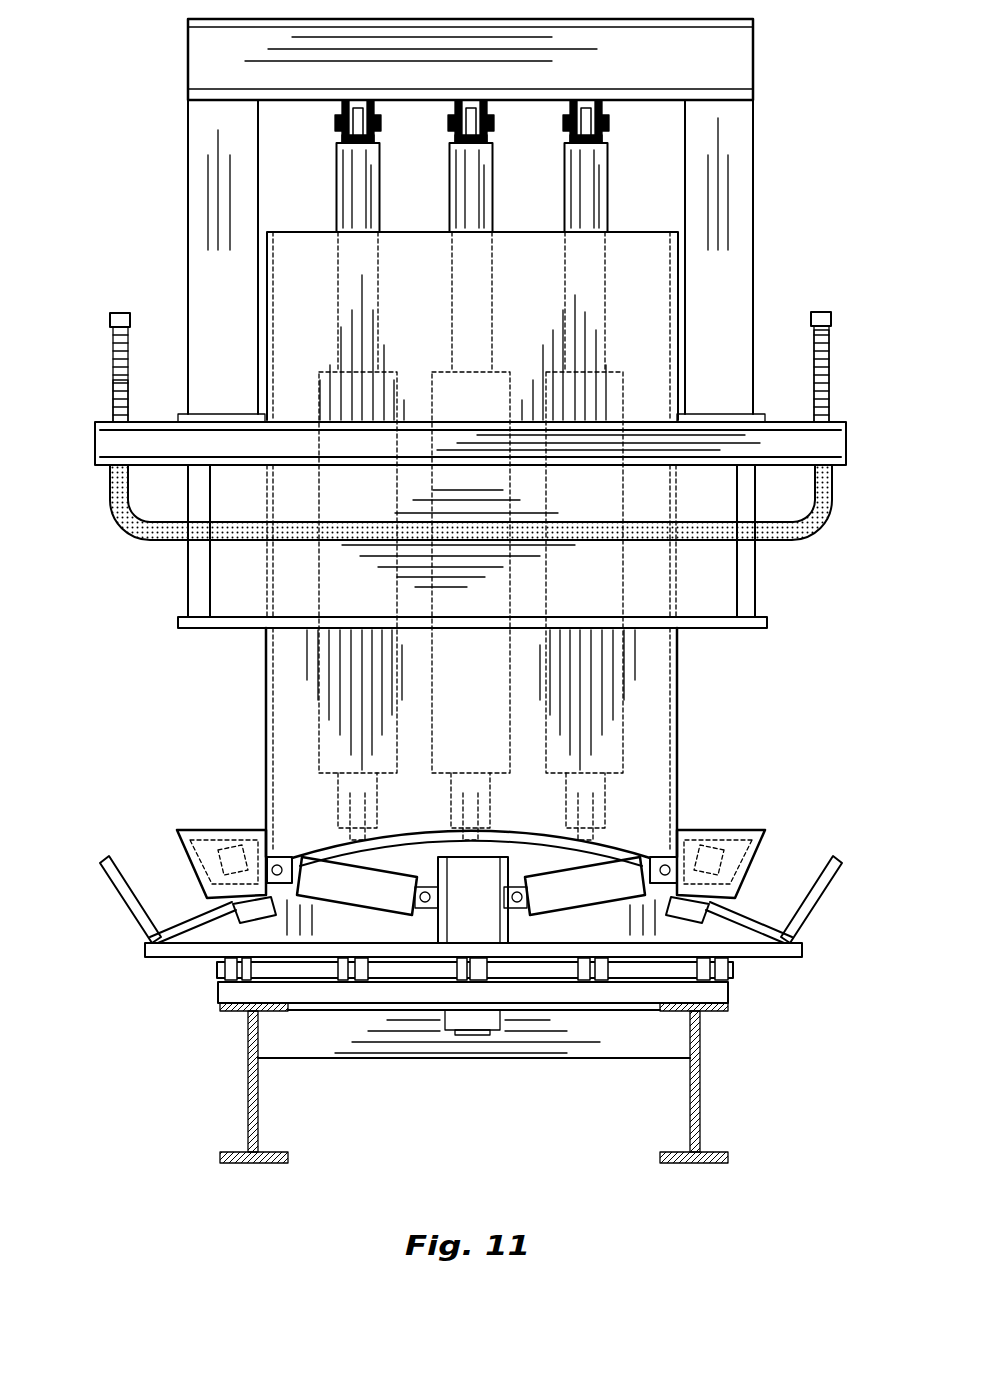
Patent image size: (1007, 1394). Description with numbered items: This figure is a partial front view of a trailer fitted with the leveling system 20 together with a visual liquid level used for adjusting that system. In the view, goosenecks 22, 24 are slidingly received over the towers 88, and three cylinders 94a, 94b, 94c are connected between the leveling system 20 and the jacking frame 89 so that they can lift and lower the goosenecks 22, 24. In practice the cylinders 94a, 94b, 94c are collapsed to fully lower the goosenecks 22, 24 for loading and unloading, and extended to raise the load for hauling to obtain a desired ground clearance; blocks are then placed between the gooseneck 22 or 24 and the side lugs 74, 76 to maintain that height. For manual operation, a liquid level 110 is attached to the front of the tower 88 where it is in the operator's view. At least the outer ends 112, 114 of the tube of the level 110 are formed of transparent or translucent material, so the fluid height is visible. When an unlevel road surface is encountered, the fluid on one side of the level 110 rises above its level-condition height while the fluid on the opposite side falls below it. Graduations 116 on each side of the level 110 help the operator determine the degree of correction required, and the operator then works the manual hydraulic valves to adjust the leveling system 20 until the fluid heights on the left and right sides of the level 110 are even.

The leveling system 20 is at (770, 885).
The gooseneck 22 is at (490, 536).
The gooseneck 24 is at (757, 587).
The side lug 74 is at (205, 830).
The side lug 76 is at (730, 830).
The tower 88 is at (677, 737).
The jacking frame 89 is at (745, 187).
The cylinder 94a is at (318, 720).
The cylinder 94b is at (510, 703).
The cylinder 94c is at (625, 716).
The liquid level 110 is at (832, 500).
The outer end 112 is at (113, 340).
The outer end 114 is at (832, 383).
The graduations 116 is at (113, 378).